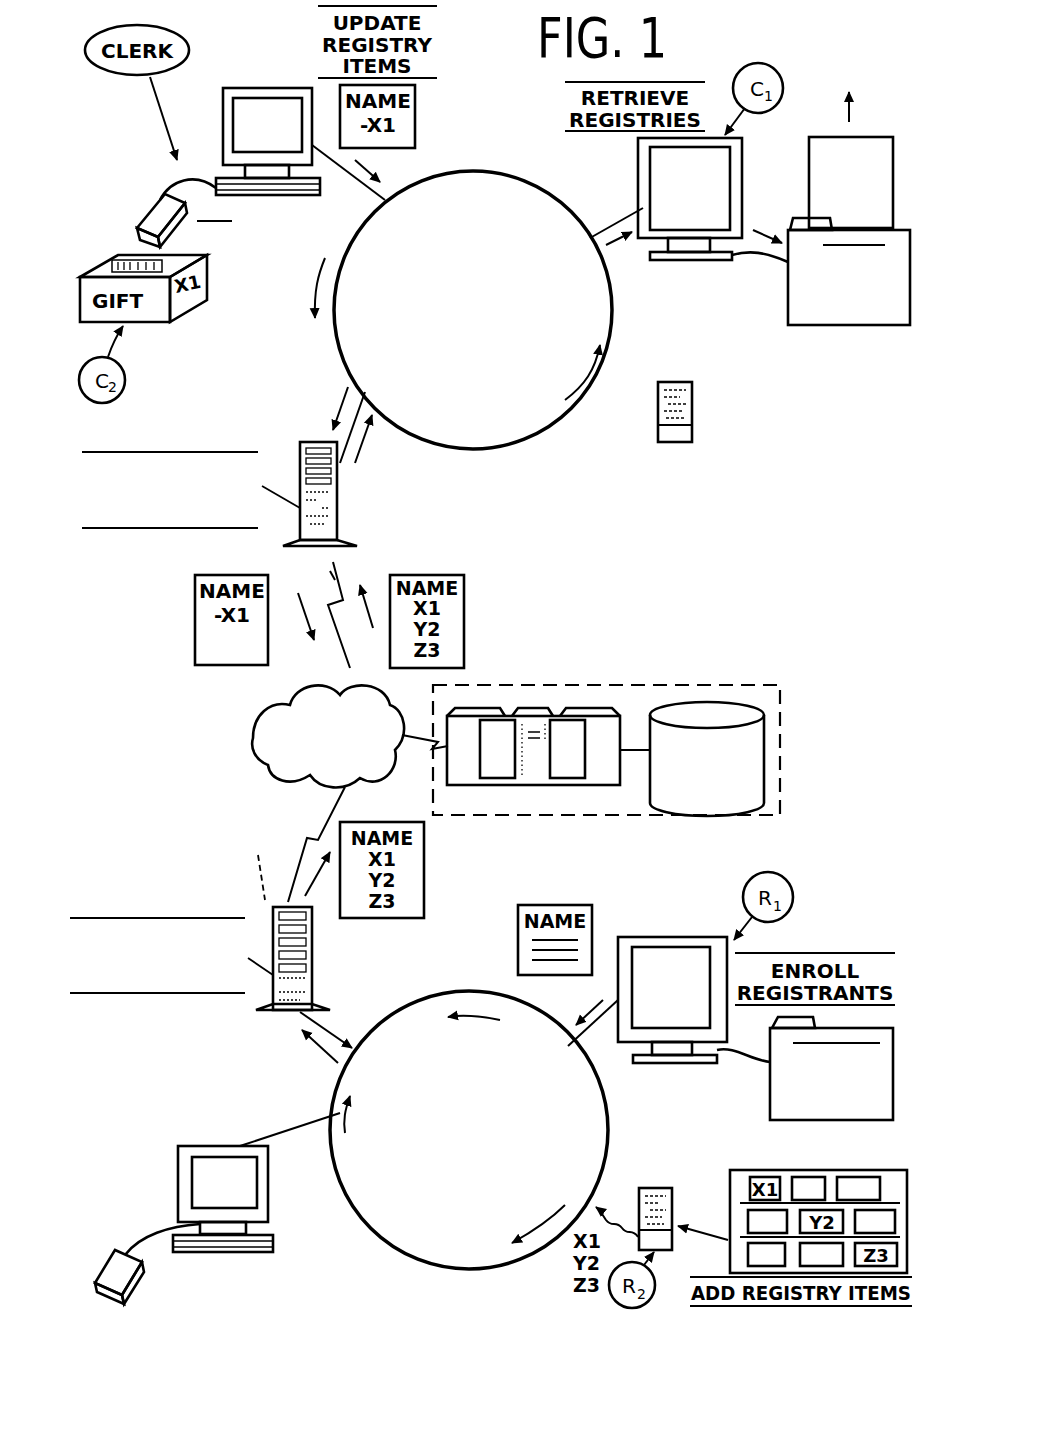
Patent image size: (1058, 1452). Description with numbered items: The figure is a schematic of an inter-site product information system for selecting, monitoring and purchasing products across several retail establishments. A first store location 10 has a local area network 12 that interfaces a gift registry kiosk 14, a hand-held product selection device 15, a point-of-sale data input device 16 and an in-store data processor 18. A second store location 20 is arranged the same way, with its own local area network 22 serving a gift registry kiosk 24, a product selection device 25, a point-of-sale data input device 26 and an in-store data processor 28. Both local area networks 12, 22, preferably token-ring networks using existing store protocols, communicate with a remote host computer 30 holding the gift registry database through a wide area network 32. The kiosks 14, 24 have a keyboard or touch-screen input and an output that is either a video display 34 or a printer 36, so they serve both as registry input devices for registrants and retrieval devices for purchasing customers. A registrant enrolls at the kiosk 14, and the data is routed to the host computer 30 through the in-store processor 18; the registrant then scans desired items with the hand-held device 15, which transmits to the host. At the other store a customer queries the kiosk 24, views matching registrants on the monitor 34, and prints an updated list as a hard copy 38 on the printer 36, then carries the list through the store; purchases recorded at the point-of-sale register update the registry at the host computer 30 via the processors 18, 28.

The first store location 10 is at (832, 890).
The local area network 12 is at (332, 1088).
The gift registry kiosk 14 is at (666, 934).
The product selection device 15 is at (672, 1193).
The point-of-sale data input device 16 is at (178, 1180).
The in-store data processor 18 is at (312, 975).
The second store location 20 is at (802, 432).
The local area network 22 is at (560, 421).
The gift registry kiosk 24 is at (746, 170).
The product selection device 25 is at (692, 422).
The point-of-sale data input device 26 is at (242, 88).
The in-store data processor 28 is at (300, 445).
The remote host computer 30 is at (612, 684).
The wide area network 32 is at (280, 768).
The video display 34 is at (712, 205).
The printer 36 is at (795, 300).
The hard copy 38 is at (862, 137).